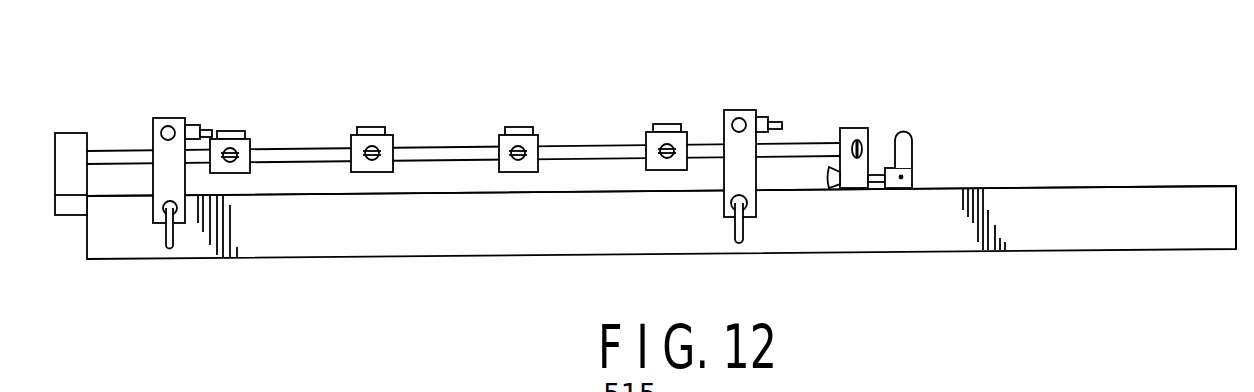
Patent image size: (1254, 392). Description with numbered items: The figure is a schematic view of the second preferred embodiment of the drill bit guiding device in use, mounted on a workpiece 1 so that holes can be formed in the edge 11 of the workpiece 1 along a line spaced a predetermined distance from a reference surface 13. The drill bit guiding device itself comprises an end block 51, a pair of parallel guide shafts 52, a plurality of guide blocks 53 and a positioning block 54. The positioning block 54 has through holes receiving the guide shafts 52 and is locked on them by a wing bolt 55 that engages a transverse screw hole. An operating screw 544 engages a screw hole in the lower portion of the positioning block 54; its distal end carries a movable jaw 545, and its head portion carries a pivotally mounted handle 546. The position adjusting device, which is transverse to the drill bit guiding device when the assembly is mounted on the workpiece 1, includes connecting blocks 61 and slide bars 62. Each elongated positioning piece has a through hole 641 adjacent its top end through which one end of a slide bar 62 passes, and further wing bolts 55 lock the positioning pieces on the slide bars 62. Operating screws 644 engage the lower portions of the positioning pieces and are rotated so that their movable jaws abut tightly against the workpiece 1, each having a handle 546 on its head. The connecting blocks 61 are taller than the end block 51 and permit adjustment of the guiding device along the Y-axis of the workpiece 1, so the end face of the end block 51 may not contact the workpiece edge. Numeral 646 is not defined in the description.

The workpiece 1 is at (1222, 186).
The edge of the workpiece 11 is at (1125, 235).
The reference surface 13 is at (1120, 186).
The end block 51 is at (73, 147).
The guide shafts 52 is at (471, 148).
The guide blocks 53 is at (250, 143).
The positioning block 54 is at (852, 128).
The wing bolt 55 is at (213, 133).
The connecting blocks 61 is at (168, 118).
The slide bars 62 is at (162, 128).
The through hole 641 is at (173, 118).
The operating screws 644 is at (185, 222).
The pin 646 is at (176, 240).
The operating screw 544 is at (895, 190).
The movable jaw 545 is at (828, 190).
The handle 546 is at (905, 143).